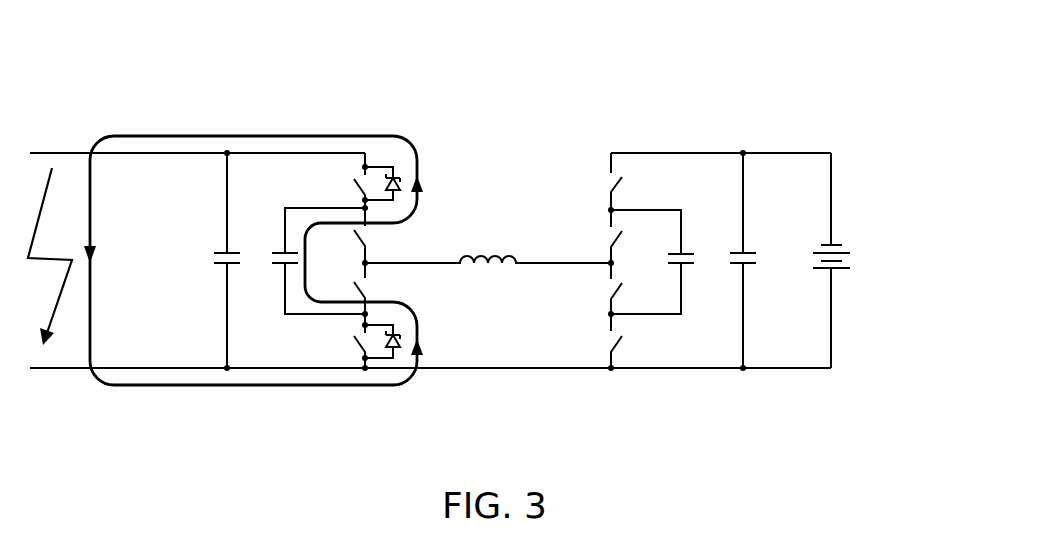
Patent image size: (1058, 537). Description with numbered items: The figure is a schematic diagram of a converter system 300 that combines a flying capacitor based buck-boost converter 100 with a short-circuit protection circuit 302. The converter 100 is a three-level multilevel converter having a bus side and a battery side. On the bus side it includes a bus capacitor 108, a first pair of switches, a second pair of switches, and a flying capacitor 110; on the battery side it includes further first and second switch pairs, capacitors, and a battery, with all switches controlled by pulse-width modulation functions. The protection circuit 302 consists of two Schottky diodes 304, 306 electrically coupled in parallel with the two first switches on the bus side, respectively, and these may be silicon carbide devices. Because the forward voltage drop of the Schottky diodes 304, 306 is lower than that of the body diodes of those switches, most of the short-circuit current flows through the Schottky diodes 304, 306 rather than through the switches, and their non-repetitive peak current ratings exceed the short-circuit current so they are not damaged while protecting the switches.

The flying capacitor based buck-boost converter 100 is at (86, 400).
The bus capacitor 108 is at (213, 252).
The flying capacitor 110 is at (278, 252).
The converter system 300 is at (480, 240).
The short-circuit protection circuit 302 is at (428, 129).
The Schottky diode 304 is at (398, 195).
The Schottky diode 306 is at (397, 353).